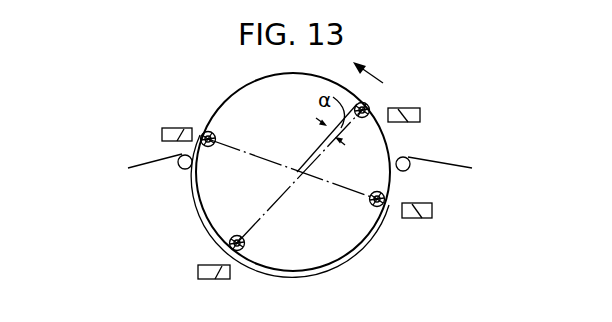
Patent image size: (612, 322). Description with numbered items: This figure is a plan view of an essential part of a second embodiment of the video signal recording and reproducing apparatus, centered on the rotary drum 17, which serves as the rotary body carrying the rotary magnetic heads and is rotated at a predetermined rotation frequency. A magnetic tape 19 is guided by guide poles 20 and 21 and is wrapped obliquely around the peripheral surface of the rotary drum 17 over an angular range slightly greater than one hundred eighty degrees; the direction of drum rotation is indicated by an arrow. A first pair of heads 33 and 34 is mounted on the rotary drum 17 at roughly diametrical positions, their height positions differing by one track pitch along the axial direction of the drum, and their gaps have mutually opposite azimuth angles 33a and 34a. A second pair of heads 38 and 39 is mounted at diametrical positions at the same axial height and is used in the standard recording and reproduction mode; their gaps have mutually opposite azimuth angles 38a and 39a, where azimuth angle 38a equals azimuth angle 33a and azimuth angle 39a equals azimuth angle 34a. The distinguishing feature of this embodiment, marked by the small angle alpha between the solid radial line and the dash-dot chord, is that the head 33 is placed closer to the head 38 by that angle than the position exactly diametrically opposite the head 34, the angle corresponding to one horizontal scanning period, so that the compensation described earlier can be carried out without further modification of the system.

The rotary drum 17 is at (243, 80).
The magnetic tape 19 is at (459, 162).
The guide pole 20 is at (181, 169).
The guide pole 21 is at (407, 158).
The rotary magnetic head 33 is at (368, 120).
The azimuth angle 33a is at (411, 107).
The rotary magnetic head 34 is at (235, 237).
The azimuth angle 34a is at (207, 265).
The rotary magnetic head 38 is at (373, 207).
The azimuth angle 38a is at (428, 219).
The rotary magnetic head 39 is at (203, 133).
The azimuth angle 39a is at (163, 131).